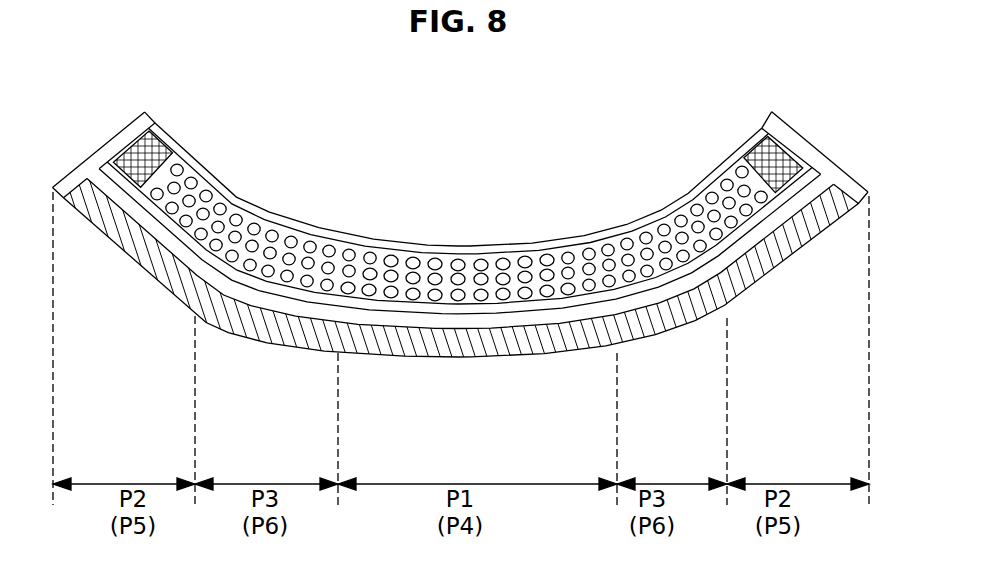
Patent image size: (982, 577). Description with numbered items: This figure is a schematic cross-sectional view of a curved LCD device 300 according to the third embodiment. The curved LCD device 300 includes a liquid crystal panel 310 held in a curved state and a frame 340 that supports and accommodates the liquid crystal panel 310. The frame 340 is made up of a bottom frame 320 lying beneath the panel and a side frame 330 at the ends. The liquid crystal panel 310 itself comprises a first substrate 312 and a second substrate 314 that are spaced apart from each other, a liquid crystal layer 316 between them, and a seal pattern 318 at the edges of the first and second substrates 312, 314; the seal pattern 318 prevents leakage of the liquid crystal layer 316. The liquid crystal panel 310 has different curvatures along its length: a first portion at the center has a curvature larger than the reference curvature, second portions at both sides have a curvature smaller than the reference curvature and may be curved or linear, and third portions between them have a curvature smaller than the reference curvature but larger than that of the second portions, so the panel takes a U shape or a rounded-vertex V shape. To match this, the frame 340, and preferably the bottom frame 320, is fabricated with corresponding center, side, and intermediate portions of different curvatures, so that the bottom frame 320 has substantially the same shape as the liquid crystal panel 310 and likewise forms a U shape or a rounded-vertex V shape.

The curved LCD device 300 is at (498, 108).
The liquid crystal panel 310 is at (548, 112).
The first substrate 312 is at (631, 232).
The second substrate 314 is at (548, 245).
The liquid crystal layer 316 is at (600, 245).
The seal pattern 318 is at (760, 155).
The bottom frame 320 is at (745, 288).
The side frame 330 is at (864, 200).
The frame 340 is at (752, 392).